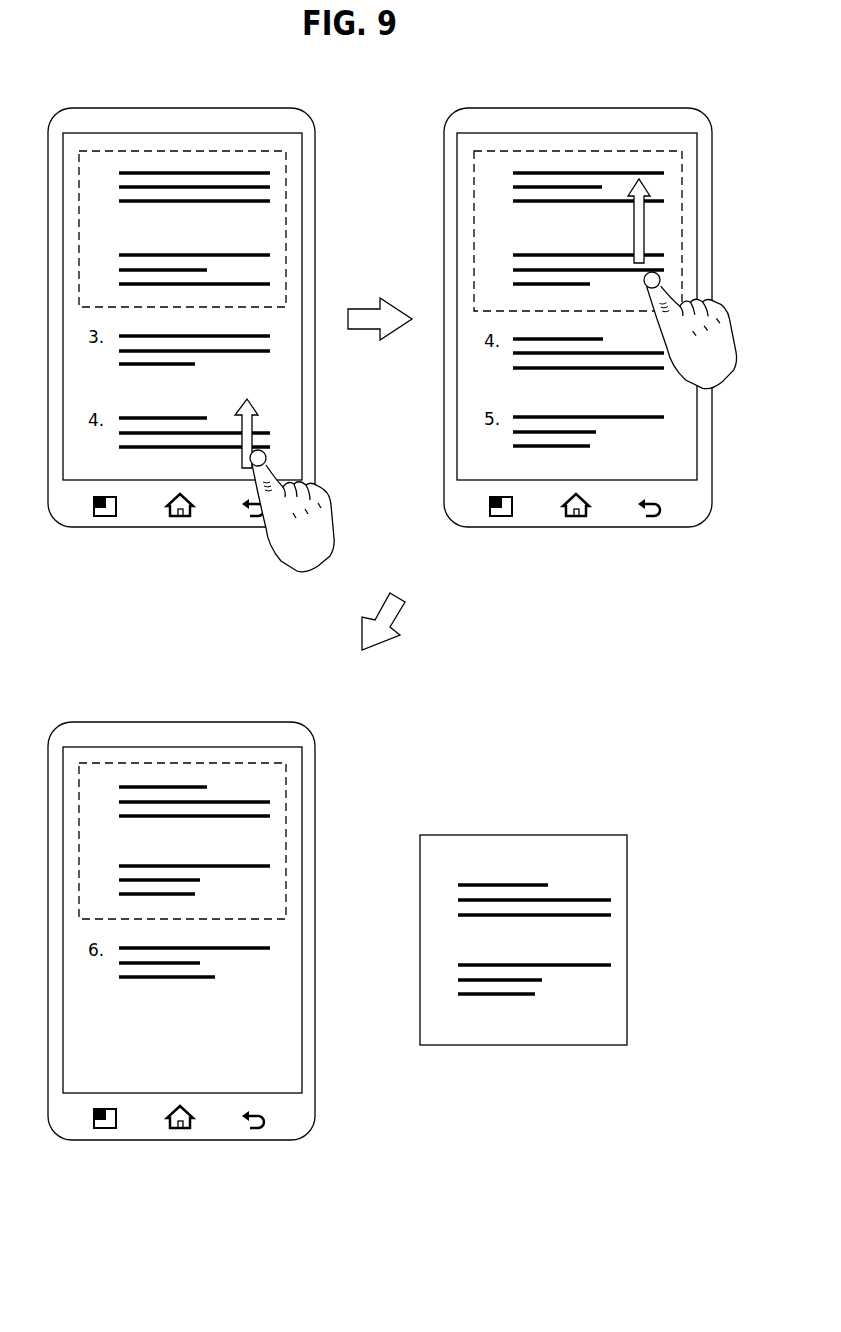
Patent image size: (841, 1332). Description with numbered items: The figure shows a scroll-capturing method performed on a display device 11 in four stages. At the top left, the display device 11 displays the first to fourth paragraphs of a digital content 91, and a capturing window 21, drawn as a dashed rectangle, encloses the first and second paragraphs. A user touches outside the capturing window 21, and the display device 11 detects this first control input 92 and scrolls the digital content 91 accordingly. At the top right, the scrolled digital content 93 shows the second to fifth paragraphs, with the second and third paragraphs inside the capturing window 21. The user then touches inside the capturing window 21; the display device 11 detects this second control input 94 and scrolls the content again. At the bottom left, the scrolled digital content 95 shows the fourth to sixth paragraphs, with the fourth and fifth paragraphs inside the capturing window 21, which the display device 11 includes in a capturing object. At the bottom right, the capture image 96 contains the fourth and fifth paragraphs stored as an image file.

The display device 11 is at (142, 527).
The capturing window 21 is at (218, 150).
The digital content 91 is at (172, 165).
The first control input 92 is at (310, 532).
The scrolled digital content 93 is at (568, 165).
The second control input 94 is at (708, 348).
The scrolled digital content 95 is at (172, 778).
The capture image 96 is at (543, 1030).